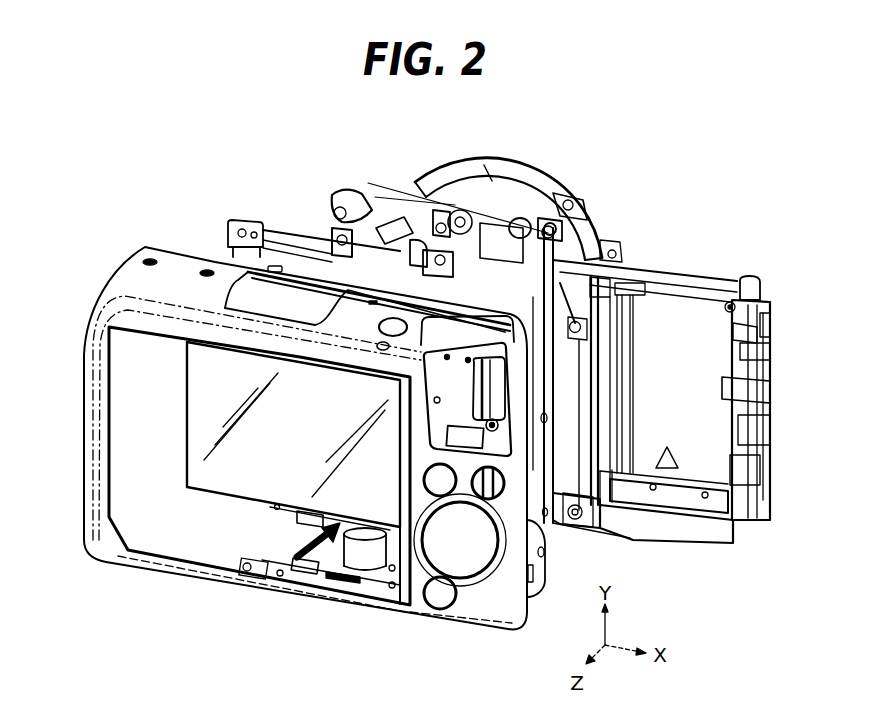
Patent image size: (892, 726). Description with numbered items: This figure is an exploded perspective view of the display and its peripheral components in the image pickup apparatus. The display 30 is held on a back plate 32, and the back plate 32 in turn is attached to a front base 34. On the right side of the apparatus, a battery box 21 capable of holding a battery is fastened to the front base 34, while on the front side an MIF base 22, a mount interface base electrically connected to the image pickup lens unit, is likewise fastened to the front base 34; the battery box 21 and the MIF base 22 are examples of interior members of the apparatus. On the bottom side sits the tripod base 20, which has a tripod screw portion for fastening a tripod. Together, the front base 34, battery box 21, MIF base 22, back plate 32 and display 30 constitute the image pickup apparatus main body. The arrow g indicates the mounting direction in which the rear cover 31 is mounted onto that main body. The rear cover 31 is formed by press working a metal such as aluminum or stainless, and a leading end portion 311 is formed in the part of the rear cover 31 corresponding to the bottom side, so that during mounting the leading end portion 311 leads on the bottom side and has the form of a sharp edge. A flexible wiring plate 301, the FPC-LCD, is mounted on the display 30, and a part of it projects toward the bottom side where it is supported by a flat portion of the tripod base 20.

The rear cover 31 is at (137, 280).
The display 30 is at (203, 418).
The flexible wiring plate (FPC-LCD) 301 is at (318, 520).
The tripod base 20 is at (293, 553).
The arrow indicating mounting direction g is at (300, 566).
The leading end portion 311 is at (333, 580).
The back plate 32 is at (283, 252).
The front base 34 is at (395, 205).
The MIF (mount interface) base 22 is at (527, 165).
The battery box 21 is at (672, 272).